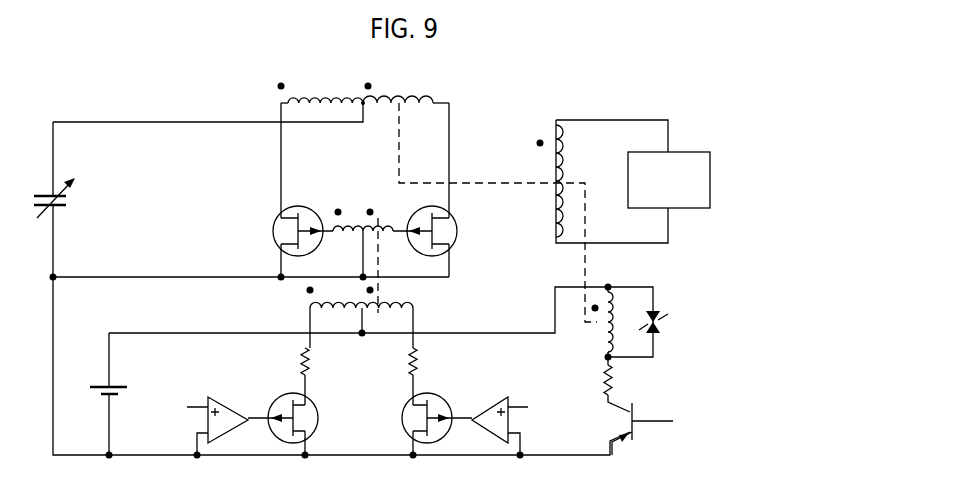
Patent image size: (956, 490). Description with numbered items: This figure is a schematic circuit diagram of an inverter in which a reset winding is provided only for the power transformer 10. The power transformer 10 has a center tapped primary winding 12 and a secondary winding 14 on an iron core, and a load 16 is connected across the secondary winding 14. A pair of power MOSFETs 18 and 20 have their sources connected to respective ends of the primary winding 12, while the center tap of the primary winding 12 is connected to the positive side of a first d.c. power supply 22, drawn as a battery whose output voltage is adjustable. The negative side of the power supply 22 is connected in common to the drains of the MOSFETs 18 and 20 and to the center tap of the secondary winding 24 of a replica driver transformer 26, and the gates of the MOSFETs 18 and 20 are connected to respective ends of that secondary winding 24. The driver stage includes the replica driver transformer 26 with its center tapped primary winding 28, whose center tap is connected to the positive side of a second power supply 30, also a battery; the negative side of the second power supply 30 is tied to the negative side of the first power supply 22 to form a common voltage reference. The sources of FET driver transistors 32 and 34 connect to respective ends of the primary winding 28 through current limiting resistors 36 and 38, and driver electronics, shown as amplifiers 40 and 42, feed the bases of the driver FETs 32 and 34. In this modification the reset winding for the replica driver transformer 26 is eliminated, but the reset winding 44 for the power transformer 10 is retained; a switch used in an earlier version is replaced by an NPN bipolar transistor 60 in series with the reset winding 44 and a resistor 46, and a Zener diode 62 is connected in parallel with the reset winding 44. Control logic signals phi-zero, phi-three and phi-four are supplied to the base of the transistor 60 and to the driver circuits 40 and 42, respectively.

The power transformer 10 is at (443, 142).
The primary winding 12 is at (390, 93).
The secondary winding 14 is at (552, 196).
The load 16 is at (687, 151).
The power MOSFET 18 is at (273, 229).
The power MOSFET 20 is at (455, 223).
The first d.c. power supply 22 is at (74, 199).
The secondary winding 24 is at (350, 224).
The replica driver transformer 26 is at (402, 251).
The primary winding 28 is at (310, 299).
The second power supply 30 is at (127, 393).
The FET driver transistor 32 is at (320, 413).
The FET driver transistor 34 is at (400, 413).
The current limiting resistor 36 is at (309, 367).
The current limiting resistor 38 is at (409, 367).
The amplifier 40 is at (236, 399).
The amplifier 42 is at (502, 397).
The reset winding 44 is at (606, 325).
The resistor 46 is at (605, 378).
The NPN bipolar transistor 60 is at (638, 430).
The Zener diode 62 is at (667, 330).